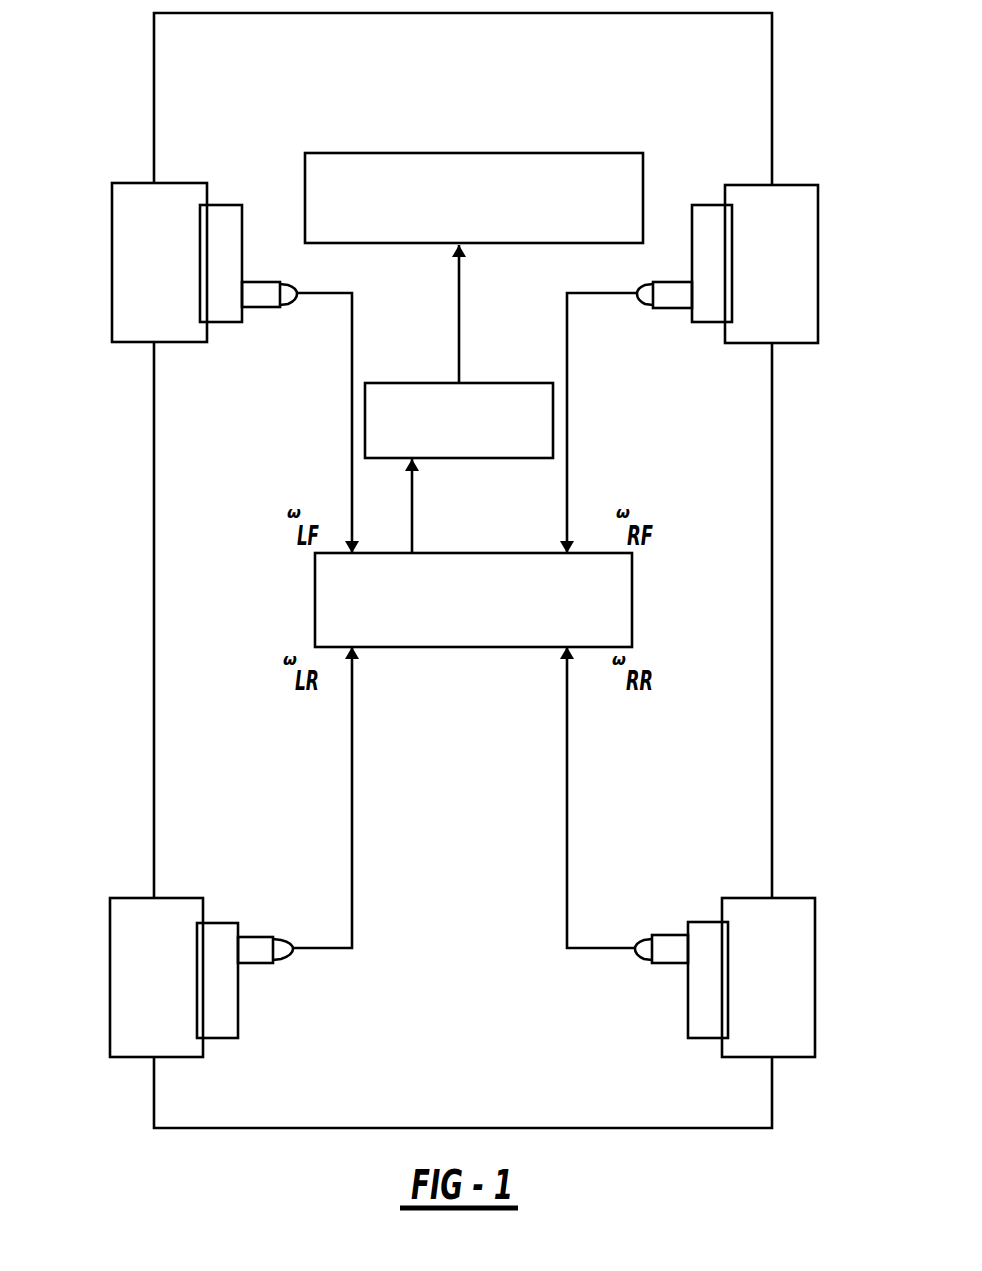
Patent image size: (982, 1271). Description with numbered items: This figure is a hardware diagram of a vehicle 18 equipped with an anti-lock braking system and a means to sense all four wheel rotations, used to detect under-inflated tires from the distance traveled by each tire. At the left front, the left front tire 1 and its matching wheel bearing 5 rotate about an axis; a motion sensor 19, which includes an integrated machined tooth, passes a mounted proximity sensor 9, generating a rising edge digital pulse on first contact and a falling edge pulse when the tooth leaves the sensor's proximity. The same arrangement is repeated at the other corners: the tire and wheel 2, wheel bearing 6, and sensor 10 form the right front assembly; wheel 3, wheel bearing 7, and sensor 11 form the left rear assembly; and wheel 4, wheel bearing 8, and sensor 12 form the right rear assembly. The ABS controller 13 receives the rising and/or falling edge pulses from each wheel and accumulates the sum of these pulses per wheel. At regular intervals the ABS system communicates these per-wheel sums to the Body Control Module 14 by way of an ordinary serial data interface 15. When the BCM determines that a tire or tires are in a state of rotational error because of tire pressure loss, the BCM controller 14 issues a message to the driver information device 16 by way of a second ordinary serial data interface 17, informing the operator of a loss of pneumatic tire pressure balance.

The left front tire 1 is at (125, 200).
The tire and wheel 2 is at (787, 200).
The wheel 3 is at (105, 1040).
The wheel 4 is at (815, 1045).
The wheel bearing 5 is at (222, 215).
The wheel bearing 6 is at (710, 205).
The wheel bearing 7 is at (222, 935).
The wheel bearing 8 is at (700, 930).
The proximity sensor 9 is at (260, 300).
The sensor 10 is at (668, 300).
The sensor 11 is at (257, 955).
The sensor 12 is at (663, 955).
The ABS controller 13 is at (460, 648).
The Body Control Module 14 is at (430, 384).
The serial data interface 15 is at (412, 538).
The driver information device 16 is at (470, 165).
The serial data interface 17 is at (459, 342).
The vehicle 18 is at (796, 514).
The motion sensor 19 is at (290, 287).